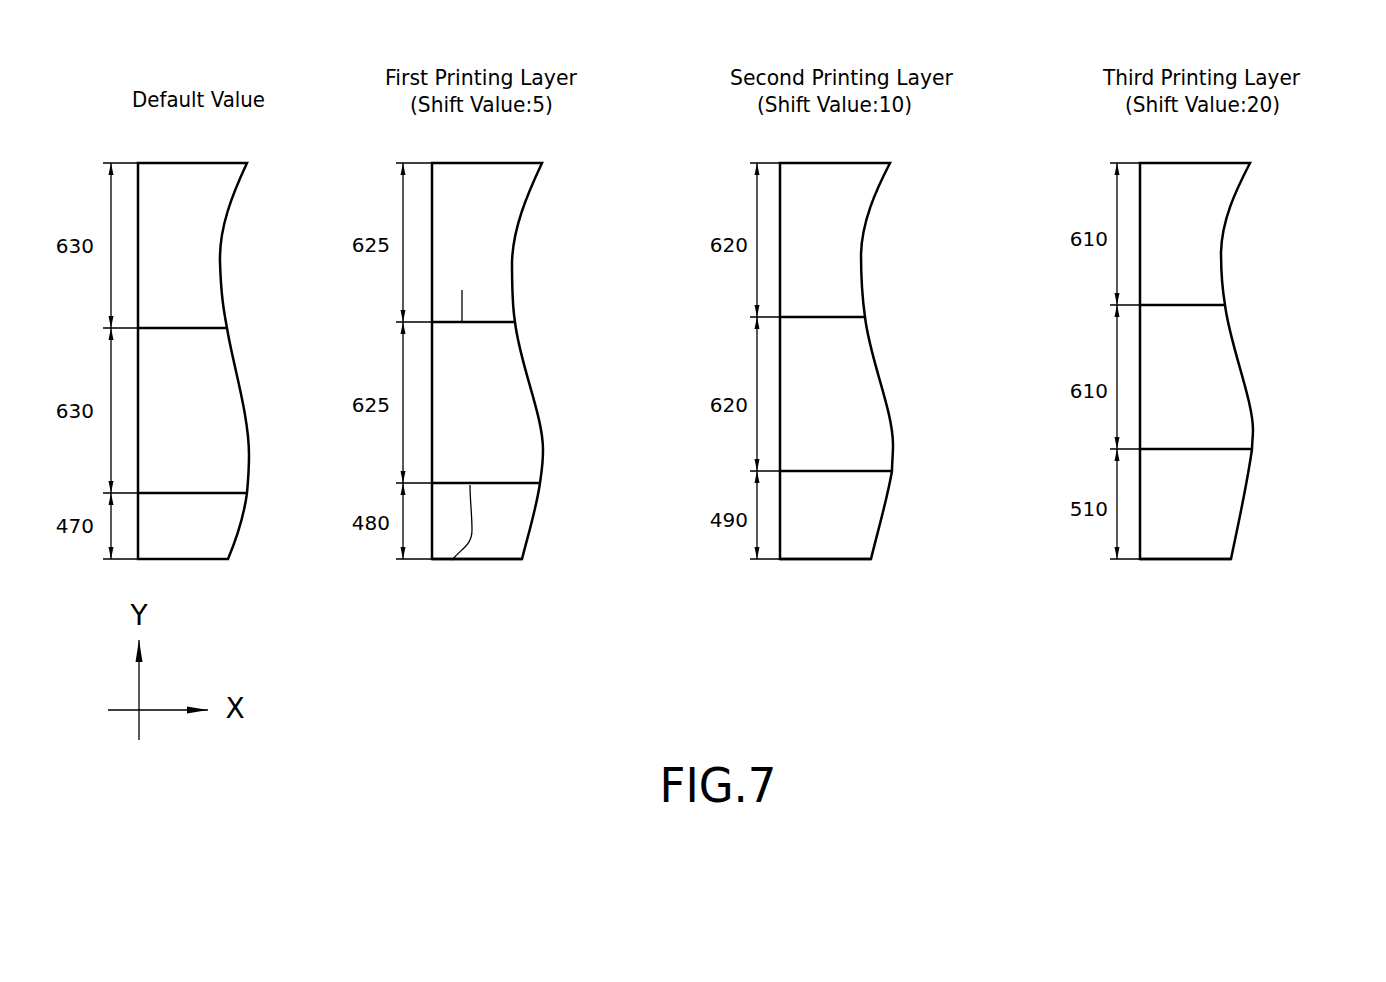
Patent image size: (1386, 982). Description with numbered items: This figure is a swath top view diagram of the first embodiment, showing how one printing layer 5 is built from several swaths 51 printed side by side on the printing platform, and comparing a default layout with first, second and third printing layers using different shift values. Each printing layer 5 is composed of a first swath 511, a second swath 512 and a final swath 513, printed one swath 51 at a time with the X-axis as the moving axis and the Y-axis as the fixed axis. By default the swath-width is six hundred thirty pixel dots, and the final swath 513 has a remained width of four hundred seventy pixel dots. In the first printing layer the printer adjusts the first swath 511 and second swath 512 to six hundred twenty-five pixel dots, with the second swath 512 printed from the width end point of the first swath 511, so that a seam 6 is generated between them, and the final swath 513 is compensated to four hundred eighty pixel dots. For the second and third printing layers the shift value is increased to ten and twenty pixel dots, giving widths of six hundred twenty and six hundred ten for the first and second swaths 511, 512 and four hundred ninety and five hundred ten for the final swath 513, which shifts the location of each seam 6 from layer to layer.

The printing layer 5 is at (482, 572).
The swath 51 is at (908, 414).
The first swath 511 is at (493, 297).
The second swath 512 is at (497, 403).
The final swath 513 is at (874, 530).
The seam 6 is at (462, 290).